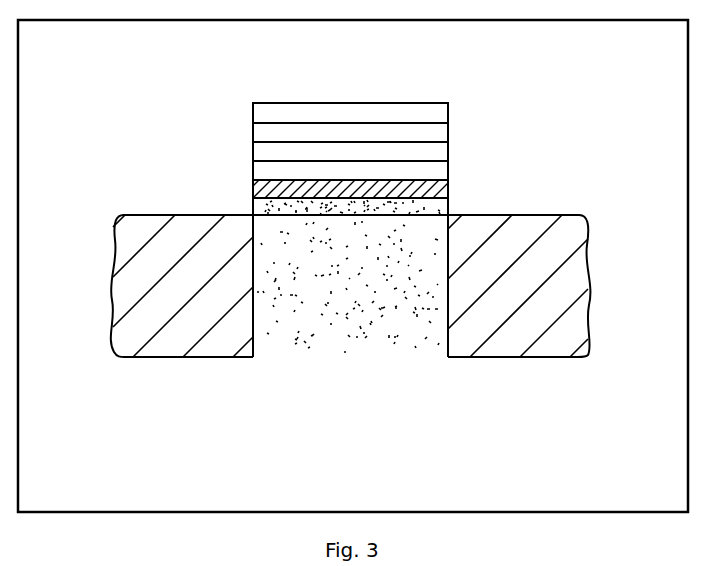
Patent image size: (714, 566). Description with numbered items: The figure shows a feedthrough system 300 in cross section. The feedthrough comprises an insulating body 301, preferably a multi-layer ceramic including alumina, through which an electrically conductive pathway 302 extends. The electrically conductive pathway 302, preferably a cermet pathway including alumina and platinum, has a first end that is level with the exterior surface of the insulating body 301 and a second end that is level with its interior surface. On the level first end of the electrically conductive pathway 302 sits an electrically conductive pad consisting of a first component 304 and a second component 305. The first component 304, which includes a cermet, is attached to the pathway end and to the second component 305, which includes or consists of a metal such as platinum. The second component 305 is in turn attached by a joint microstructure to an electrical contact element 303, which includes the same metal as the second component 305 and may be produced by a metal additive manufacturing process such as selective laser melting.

The feedthrough system 300 is at (335, 272).
The insulating body 301 is at (528, 322).
The electrically conductive pathway 302 is at (350, 315).
The electrical contact element 303 is at (460, 153).
The first component 304 is at (450, 205).
The second component 305 is at (253, 192).